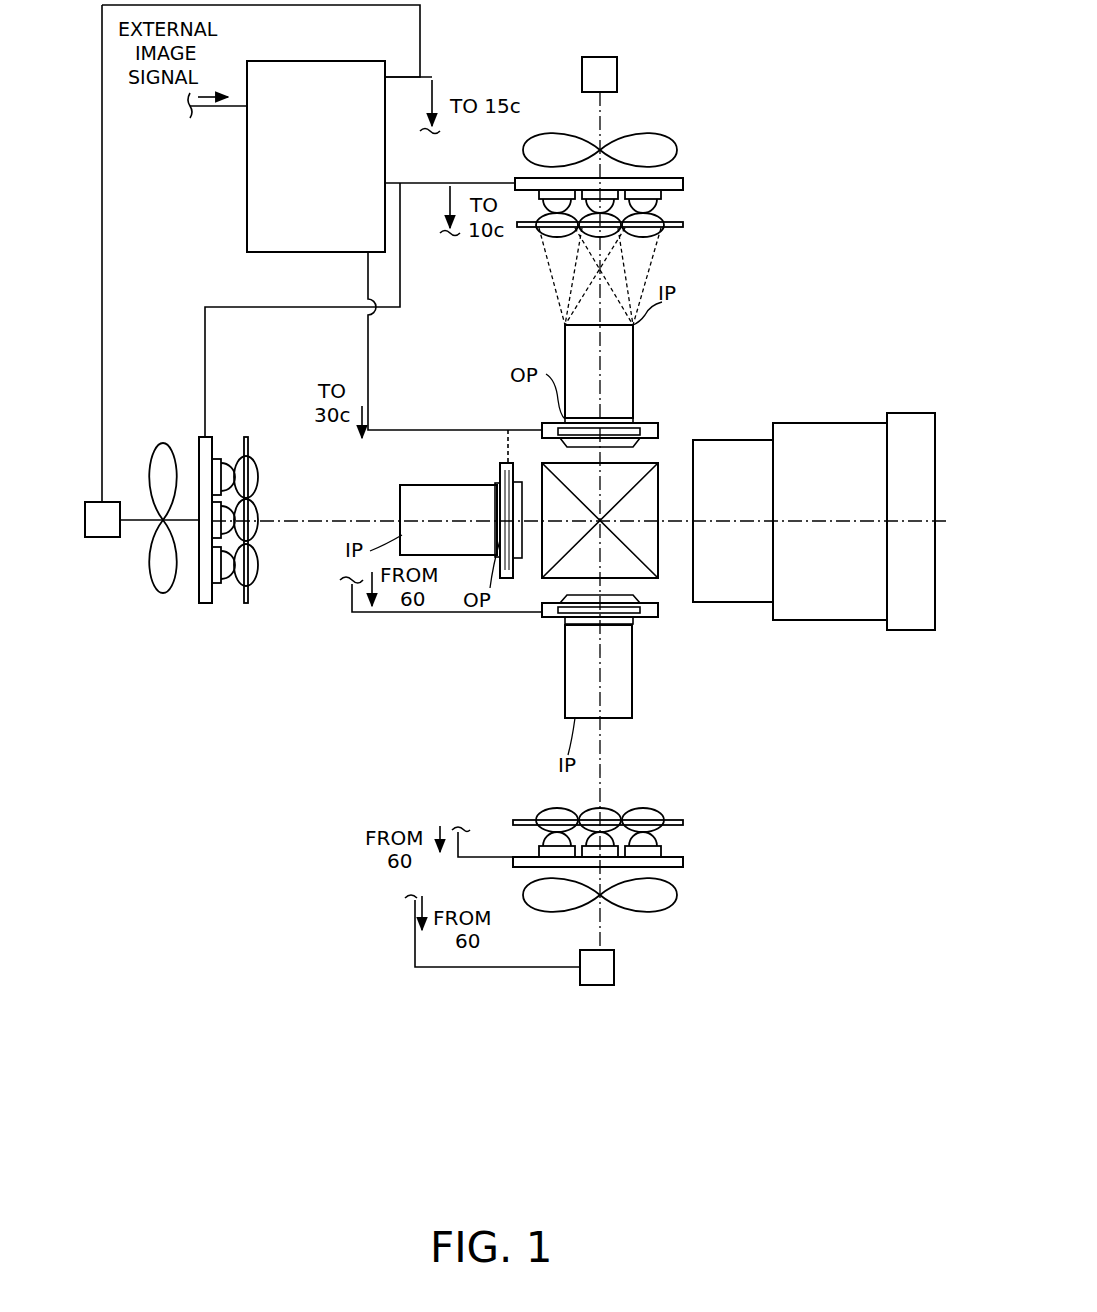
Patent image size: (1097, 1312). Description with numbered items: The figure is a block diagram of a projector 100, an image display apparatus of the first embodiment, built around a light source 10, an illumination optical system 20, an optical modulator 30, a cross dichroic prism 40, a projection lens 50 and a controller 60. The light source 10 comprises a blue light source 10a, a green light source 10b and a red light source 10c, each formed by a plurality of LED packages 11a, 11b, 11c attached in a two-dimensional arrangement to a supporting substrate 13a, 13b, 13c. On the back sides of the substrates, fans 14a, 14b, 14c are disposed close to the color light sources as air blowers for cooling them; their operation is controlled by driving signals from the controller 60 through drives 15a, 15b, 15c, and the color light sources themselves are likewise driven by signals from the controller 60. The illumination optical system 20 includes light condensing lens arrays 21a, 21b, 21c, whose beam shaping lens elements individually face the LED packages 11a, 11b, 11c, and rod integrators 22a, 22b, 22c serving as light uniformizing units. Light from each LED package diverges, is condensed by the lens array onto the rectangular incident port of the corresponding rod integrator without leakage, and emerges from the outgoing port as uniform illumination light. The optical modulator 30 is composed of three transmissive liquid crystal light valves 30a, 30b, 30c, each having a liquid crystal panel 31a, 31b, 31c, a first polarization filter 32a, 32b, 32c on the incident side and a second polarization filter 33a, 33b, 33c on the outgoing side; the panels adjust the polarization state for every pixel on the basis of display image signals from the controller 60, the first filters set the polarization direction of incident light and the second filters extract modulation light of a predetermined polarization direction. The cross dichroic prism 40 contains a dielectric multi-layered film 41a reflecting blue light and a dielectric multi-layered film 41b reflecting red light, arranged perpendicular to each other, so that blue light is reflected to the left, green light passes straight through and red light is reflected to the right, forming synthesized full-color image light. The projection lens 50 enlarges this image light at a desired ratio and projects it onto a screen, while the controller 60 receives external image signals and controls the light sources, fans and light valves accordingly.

The projector 100 is at (880, 72).
The light source 10 is at (784, 182).
The blue light source 10a is at (615, 160).
The green light source 10b is at (201, 551).
The red light source 10c is at (623, 889).
The LED package 11a is at (660, 198).
The LED package 11b is at (225, 462).
The LED package 11c is at (538, 834).
The substrate 13a is at (547, 182).
The substrate 13b is at (205, 448).
The substrate 13c is at (645, 867).
The fan 14a is at (640, 146).
The fan 14b is at (160, 594).
The fan 14c is at (540, 905).
The drive 15a is at (604, 57).
The drive 15b is at (102, 537).
The drive 15c is at (615, 967).
The illumination optical system 20 is at (742, 262).
The light condensing lens array 21a is at (683, 225).
The light condensing lens array 21b is at (249, 598).
The light condensing lens array 21c is at (683, 822).
The rod integrator 22a is at (575, 332).
The rod integrator 22b is at (403, 498).
The rod integrator 22c is at (577, 690).
The optical modulator 30 is at (712, 421).
The liquid crystal light valve 30a is at (591, 390).
The liquid crystal light valve 30b is at (418, 548).
The liquid crystal light valve 30c is at (595, 668).
The liquid crystal panel 31a is at (655, 433).
The liquid crystal panel 31b is at (495, 486).
The liquid crystal panel 31c is at (655, 620).
The first polarization filter 32a is at (658, 425).
The first polarization filter 32b is at (497, 488).
The first polarization filter 32c is at (552, 625).
The second polarization filter 33a is at (567, 446).
The second polarization filter 33b is at (530, 548).
The second polarization filter 33c is at (650, 607).
The cross dichroic prism 40 is at (613, 490).
The dielectric multi-layered film 41a is at (540, 580).
The dielectric multi-layered film 41b is at (503, 465).
The projection lens 50 is at (830, 620).
The controller 60 is at (247, 195).